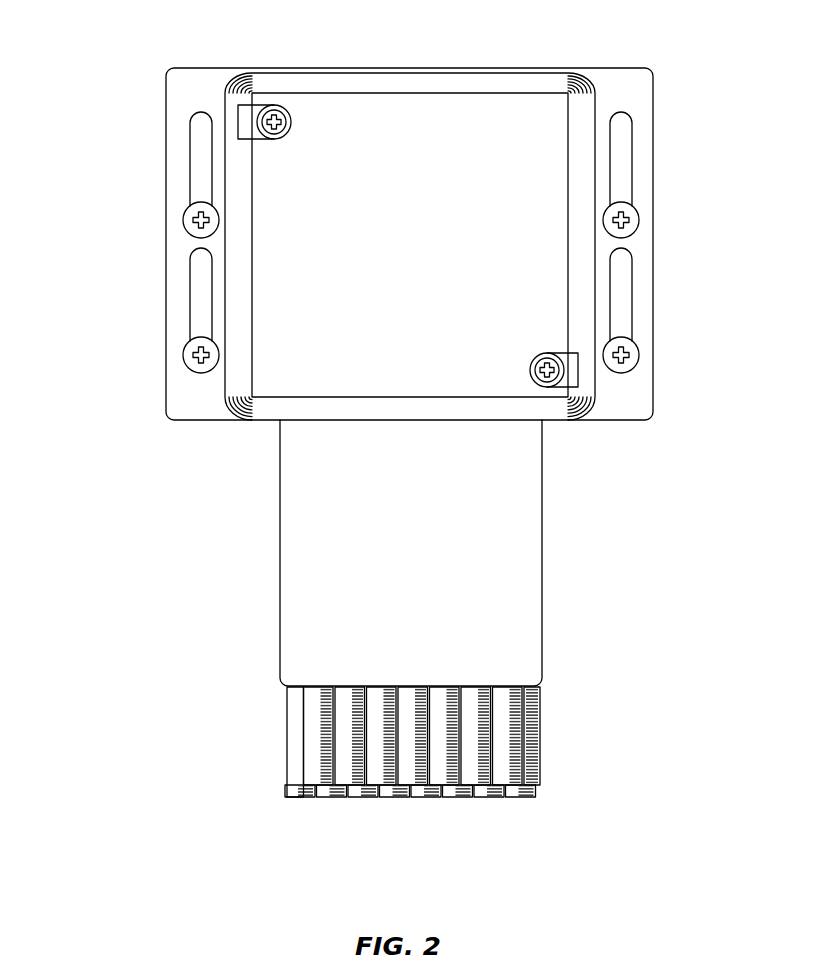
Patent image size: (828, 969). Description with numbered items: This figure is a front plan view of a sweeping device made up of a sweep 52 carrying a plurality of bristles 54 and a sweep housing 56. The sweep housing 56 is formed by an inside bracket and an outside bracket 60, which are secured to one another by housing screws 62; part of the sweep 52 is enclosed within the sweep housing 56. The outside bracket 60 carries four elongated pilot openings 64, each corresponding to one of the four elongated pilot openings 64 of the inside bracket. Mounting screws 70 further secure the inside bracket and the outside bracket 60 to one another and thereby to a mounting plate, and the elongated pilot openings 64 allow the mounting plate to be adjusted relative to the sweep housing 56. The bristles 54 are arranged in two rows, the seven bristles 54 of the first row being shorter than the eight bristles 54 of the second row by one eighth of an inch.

The sweep 52 is at (397, 530).
The bristles 54 is at (348, 686).
The sweep housing 56 is at (130, 65).
The outside bracket 60 is at (397, 255).
The housing screws 62 is at (284, 132).
The elongated pilot openings 64 is at (198, 156).
The mounting screws 70 is at (187, 215).